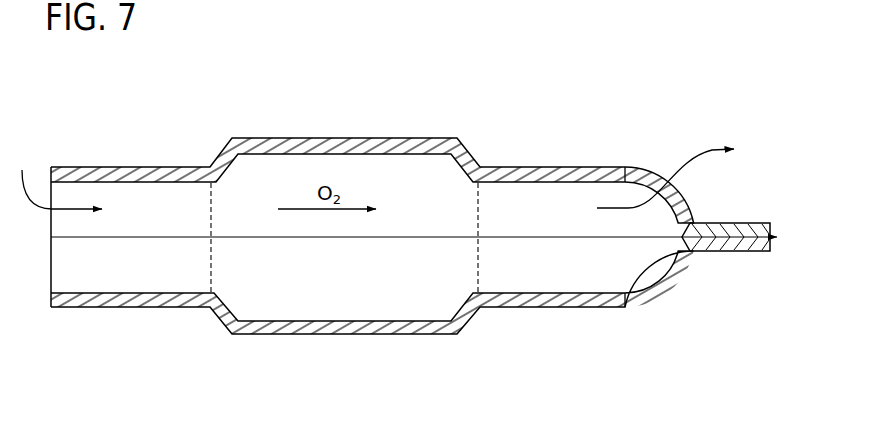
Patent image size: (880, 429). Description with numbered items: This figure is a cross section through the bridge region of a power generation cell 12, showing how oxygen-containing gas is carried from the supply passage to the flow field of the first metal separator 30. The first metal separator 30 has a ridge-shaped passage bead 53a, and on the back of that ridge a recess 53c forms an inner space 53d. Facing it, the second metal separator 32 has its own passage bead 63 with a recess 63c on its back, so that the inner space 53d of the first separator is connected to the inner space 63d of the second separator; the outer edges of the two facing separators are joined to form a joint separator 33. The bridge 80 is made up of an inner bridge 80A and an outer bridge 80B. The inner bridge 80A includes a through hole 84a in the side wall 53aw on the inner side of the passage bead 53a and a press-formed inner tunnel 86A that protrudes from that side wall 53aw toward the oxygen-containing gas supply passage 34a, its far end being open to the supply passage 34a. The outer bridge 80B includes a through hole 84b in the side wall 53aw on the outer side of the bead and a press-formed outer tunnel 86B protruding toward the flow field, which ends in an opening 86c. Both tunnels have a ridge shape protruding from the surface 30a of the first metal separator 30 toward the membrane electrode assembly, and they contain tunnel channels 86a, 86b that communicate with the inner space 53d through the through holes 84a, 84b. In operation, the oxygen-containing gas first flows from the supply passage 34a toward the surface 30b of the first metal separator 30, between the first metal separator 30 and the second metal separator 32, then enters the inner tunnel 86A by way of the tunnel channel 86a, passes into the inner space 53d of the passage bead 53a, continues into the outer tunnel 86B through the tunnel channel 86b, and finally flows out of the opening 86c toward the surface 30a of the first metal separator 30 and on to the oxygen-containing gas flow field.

The power generation cell 12 is at (623, 44).
The first metal separator 30 is at (718, 221).
The surface of the first metal separator 30a is at (743, 223).
The surface of the first metal separator 30b is at (724, 238).
The second metal separator 32 is at (750, 254).
The joint separator 33 is at (664, 316).
The oxygen-containing gas supply passage 34a is at (40, 193).
The passage bead 53a is at (313, 136).
The side wall of the passage bead 53aw is at (220, 158).
The recess 53c is at (262, 152).
The inner space of the passage bead 53d is at (395, 163).
The passage bead 63 is at (358, 335).
The recess 63c is at (313, 319).
The inner space of the passage bead 63d is at (408, 297).
The bridge 80 is at (647, 102).
The inner bridge 80A is at (113, 165).
The outer bridge 80B is at (612, 165).
The through hole 84a is at (202, 206).
The through hole 84b is at (487, 207).
The inner tunnel 86A is at (137, 170).
The tunnel channel 86a is at (125, 215).
The outer tunnel 86B is at (587, 175).
The tunnel channel 86b is at (540, 210).
The opening 86c is at (648, 180).